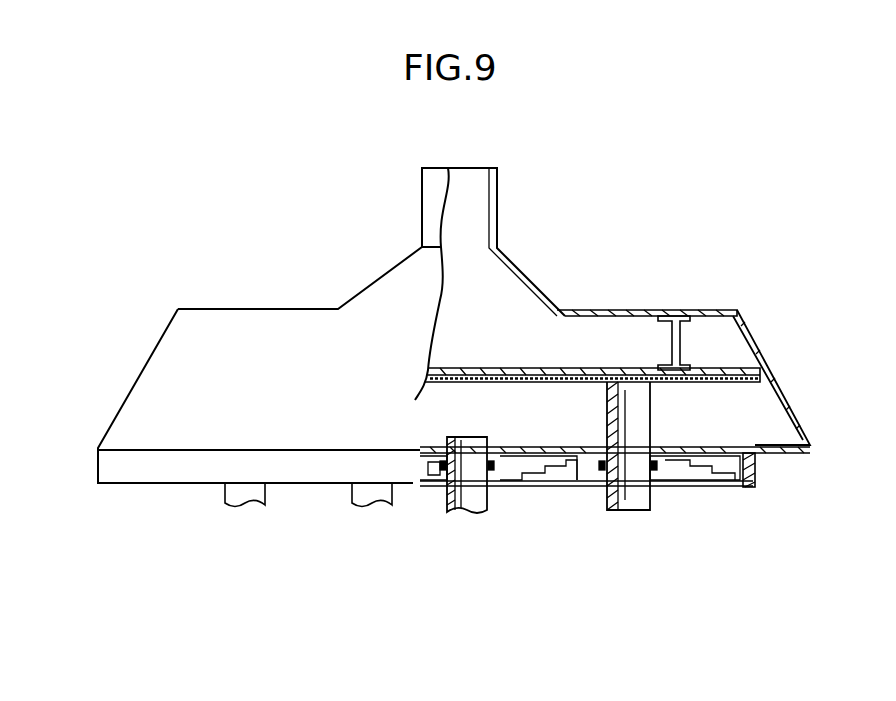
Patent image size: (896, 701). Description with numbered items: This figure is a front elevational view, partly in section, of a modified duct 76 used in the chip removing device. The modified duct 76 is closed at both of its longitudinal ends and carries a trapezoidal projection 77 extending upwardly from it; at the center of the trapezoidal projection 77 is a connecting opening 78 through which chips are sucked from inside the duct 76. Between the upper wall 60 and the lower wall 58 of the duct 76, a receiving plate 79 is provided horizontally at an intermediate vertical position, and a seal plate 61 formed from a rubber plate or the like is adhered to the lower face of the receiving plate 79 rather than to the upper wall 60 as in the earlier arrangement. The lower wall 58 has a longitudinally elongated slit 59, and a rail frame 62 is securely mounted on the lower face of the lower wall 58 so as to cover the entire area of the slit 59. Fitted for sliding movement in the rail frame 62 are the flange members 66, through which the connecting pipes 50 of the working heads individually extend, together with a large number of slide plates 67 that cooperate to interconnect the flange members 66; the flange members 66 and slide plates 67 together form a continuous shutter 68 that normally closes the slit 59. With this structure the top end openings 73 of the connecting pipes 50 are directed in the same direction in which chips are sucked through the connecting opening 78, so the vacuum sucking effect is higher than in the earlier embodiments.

The connecting pipe 50 is at (447, 500).
The lower wall 58 is at (773, 458).
The slit 59 is at (700, 455).
The upper wall 60 is at (686, 315).
The seal plate 61 is at (758, 350).
The rail frame 62 is at (766, 488).
The flange member 66 is at (500, 485).
The slide plate 67 is at (562, 480).
The continuous shutter 68 is at (735, 452).
The top end opening 73 is at (424, 482).
The modified duct 76 is at (263, 323).
The trapezoidal projection 77 is at (540, 287).
The connecting opening 78 is at (480, 167).
The receiving plate 79 is at (595, 368).